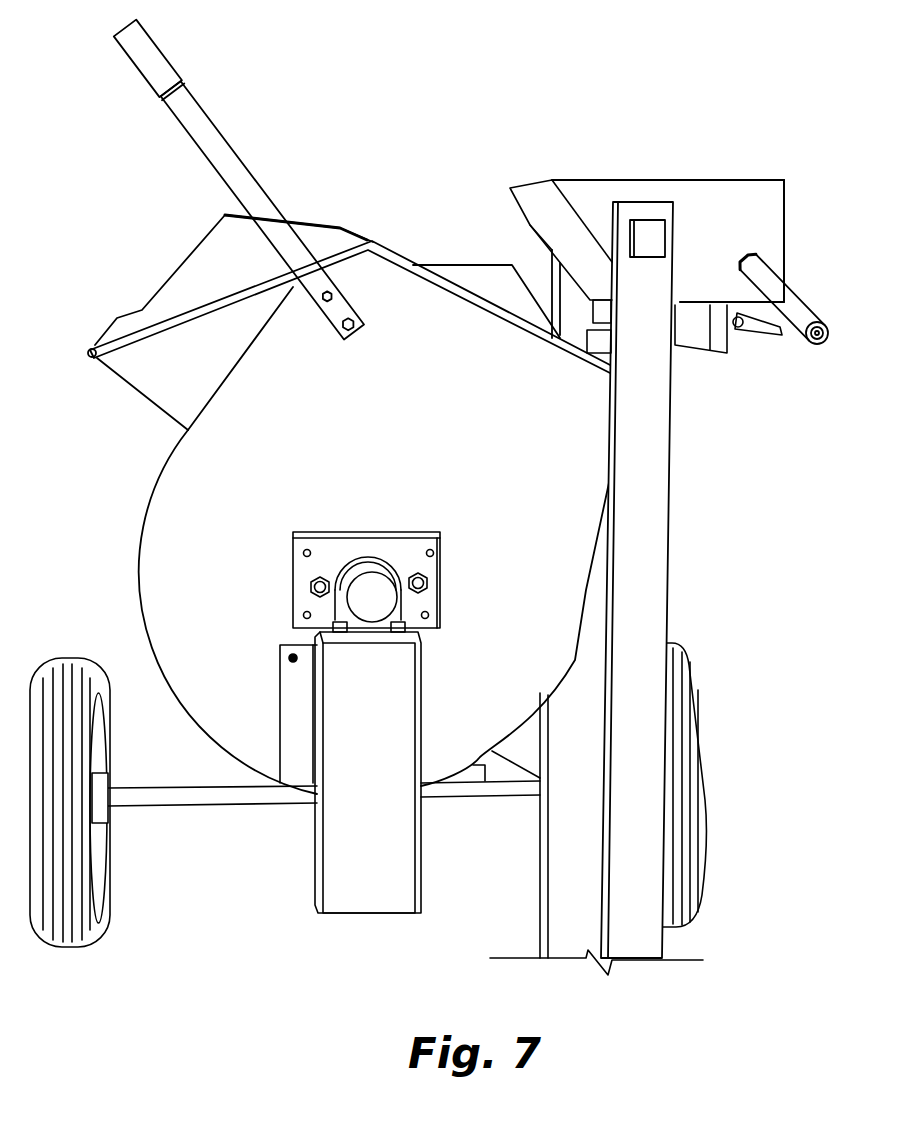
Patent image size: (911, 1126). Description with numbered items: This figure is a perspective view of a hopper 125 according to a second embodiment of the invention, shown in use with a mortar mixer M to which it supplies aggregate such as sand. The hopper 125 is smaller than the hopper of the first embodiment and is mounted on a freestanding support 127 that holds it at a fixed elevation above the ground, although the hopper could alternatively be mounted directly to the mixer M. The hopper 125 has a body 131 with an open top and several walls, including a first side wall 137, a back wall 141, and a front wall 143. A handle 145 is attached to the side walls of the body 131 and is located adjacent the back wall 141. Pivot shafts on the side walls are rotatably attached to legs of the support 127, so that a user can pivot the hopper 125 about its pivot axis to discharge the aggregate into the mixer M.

The mortar mixer M is at (172, 499).
The hopper 125 is at (717, 176).
The freestanding support 127 is at (660, 496).
The body 131 is at (770, 196).
The first side wall 137 is at (768, 222).
The back wall 141 is at (790, 258).
The front wall 143 is at (500, 207).
The handle 145 is at (773, 340).